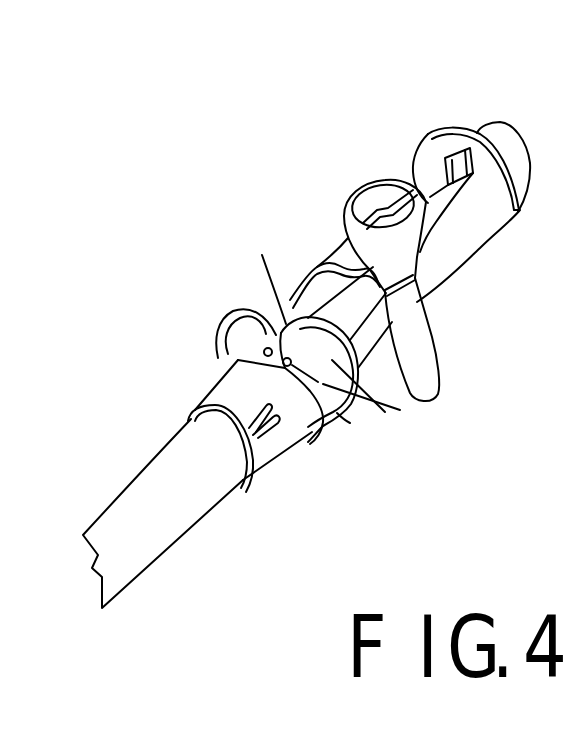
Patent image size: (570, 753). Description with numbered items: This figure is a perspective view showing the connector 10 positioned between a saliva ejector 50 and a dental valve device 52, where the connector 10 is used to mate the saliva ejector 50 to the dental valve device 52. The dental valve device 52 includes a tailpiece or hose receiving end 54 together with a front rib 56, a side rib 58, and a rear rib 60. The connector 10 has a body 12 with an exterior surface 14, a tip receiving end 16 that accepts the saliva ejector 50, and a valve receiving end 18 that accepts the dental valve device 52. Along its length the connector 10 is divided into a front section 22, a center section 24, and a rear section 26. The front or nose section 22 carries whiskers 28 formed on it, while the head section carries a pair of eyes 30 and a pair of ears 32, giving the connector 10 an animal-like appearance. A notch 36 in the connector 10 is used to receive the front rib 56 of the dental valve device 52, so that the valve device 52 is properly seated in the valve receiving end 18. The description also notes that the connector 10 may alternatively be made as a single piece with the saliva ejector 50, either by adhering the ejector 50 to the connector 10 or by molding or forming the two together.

The connector 10 is at (197, 303).
The body 12 is at (321, 459).
The exterior surface 14 is at (203, 384).
The tip receiving end 16 is at (246, 480).
The valve receiving end 18 is at (309, 317).
The front section 22 is at (275, 443).
The center section 24 is at (350, 423).
The rear section 26 is at (276, 322).
The whiskers 28 is at (257, 418).
The pair of eyes 30 is at (385, 412).
The pair of ears 32 is at (400, 410).
The notch 36 is at (262, 255).
The saliva ejector 50 is at (172, 562).
The dental valve device 52 is at (396, 124).
The hose receiving end 54 is at (511, 142).
The front rib 56 is at (304, 316).
The side rib 58 is at (430, 260).
The rear rib 60 is at (460, 168).